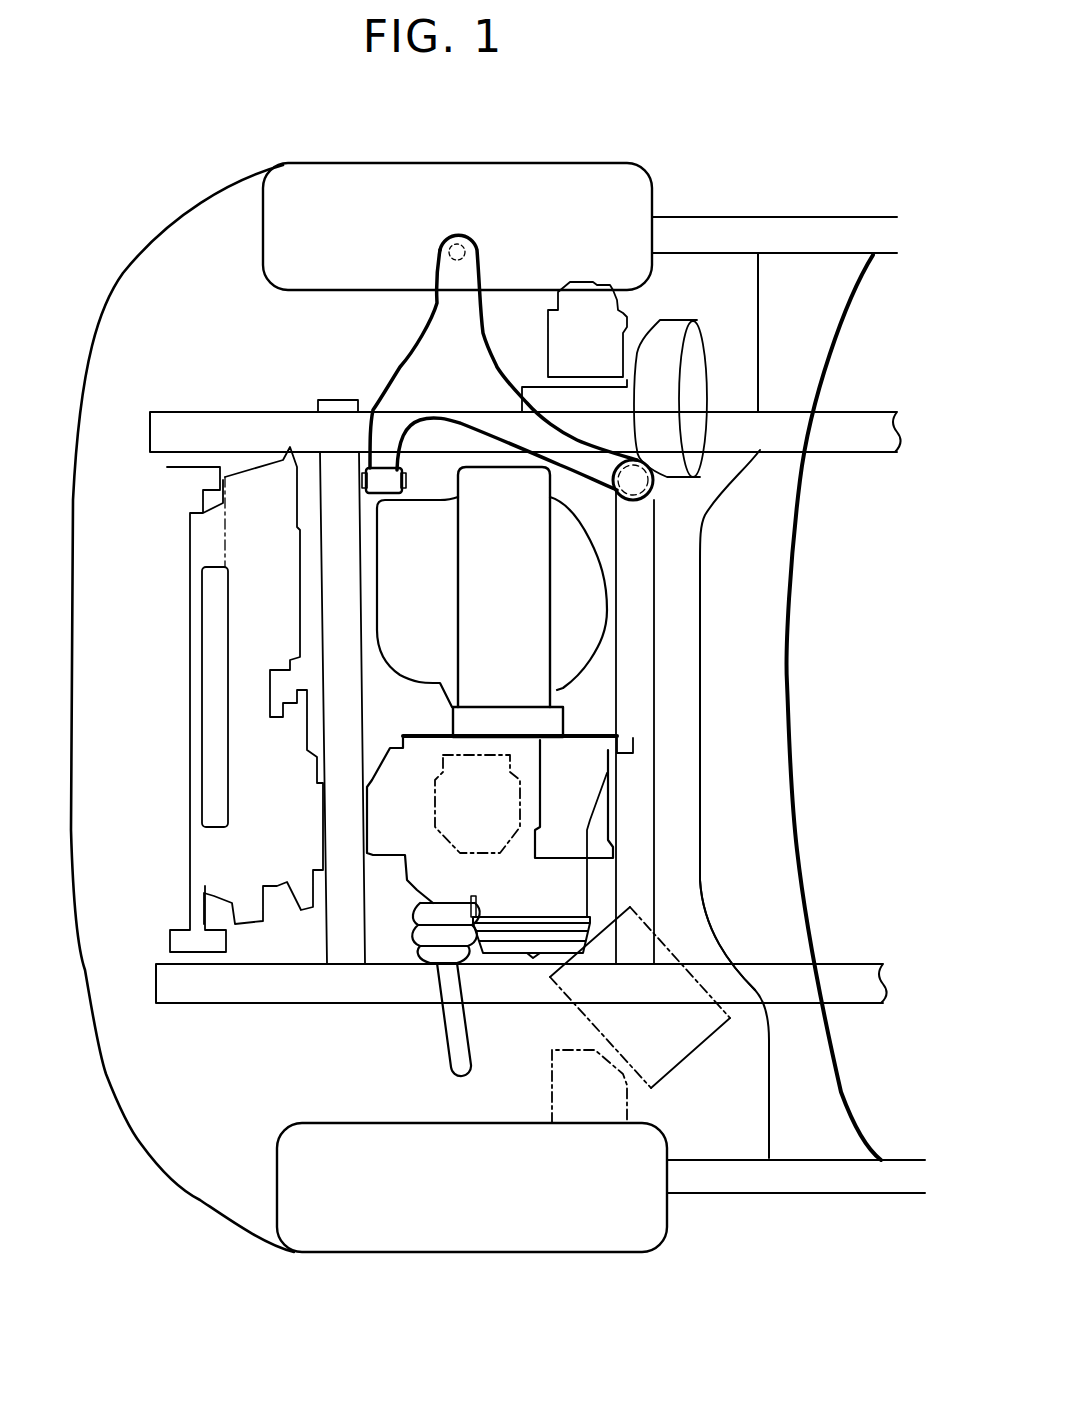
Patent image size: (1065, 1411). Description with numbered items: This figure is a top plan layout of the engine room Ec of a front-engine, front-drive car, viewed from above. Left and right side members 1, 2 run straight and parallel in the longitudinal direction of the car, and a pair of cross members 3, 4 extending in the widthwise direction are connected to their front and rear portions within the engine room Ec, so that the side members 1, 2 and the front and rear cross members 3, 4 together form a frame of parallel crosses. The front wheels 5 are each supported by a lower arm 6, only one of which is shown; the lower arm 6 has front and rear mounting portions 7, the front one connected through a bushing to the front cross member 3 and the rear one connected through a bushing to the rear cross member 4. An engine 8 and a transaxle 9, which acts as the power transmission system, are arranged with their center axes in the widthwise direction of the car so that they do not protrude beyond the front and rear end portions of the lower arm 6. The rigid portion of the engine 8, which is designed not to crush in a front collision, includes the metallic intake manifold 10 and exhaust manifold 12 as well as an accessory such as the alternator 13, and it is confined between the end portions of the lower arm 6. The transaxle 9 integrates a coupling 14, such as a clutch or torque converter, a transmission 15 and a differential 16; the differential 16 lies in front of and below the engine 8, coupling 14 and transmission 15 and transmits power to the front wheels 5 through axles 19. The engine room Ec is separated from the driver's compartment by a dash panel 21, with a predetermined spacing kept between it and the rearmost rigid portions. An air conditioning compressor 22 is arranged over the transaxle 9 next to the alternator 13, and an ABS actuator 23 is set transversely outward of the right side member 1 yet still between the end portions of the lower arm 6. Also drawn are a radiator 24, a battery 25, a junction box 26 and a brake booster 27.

The side member 1 is at (177, 428).
The side member 2 is at (207, 1003).
The front cross member 3 is at (330, 487).
The rear cross member 4 is at (640, 630).
The front wheel 5 is at (640, 185).
The lower arm 6 is at (437, 327).
The mounting portion 7 is at (380, 480).
The engine 8 is at (510, 556).
The transaxle 9 is at (848, 660).
The intake manifold 10 is at (400, 577).
The exhaust manifold 12 is at (590, 557).
The alternator 13 is at (469, 837).
The coupling 14 is at (627, 750).
The transmission 15 is at (570, 887).
The differential 16 is at (388, 817).
The axle 19 is at (458, 1036).
The dash panel 21 is at (700, 890).
The air conditioning compressor 22 is at (550, 853).
The ABS actuator 23 is at (613, 320).
The radiator 24 is at (257, 782).
The battery 25 is at (704, 1039).
The junction box 26 is at (564, 1099).
The brake booster 27 is at (687, 327).
The engine room Ec is at (688, 585).